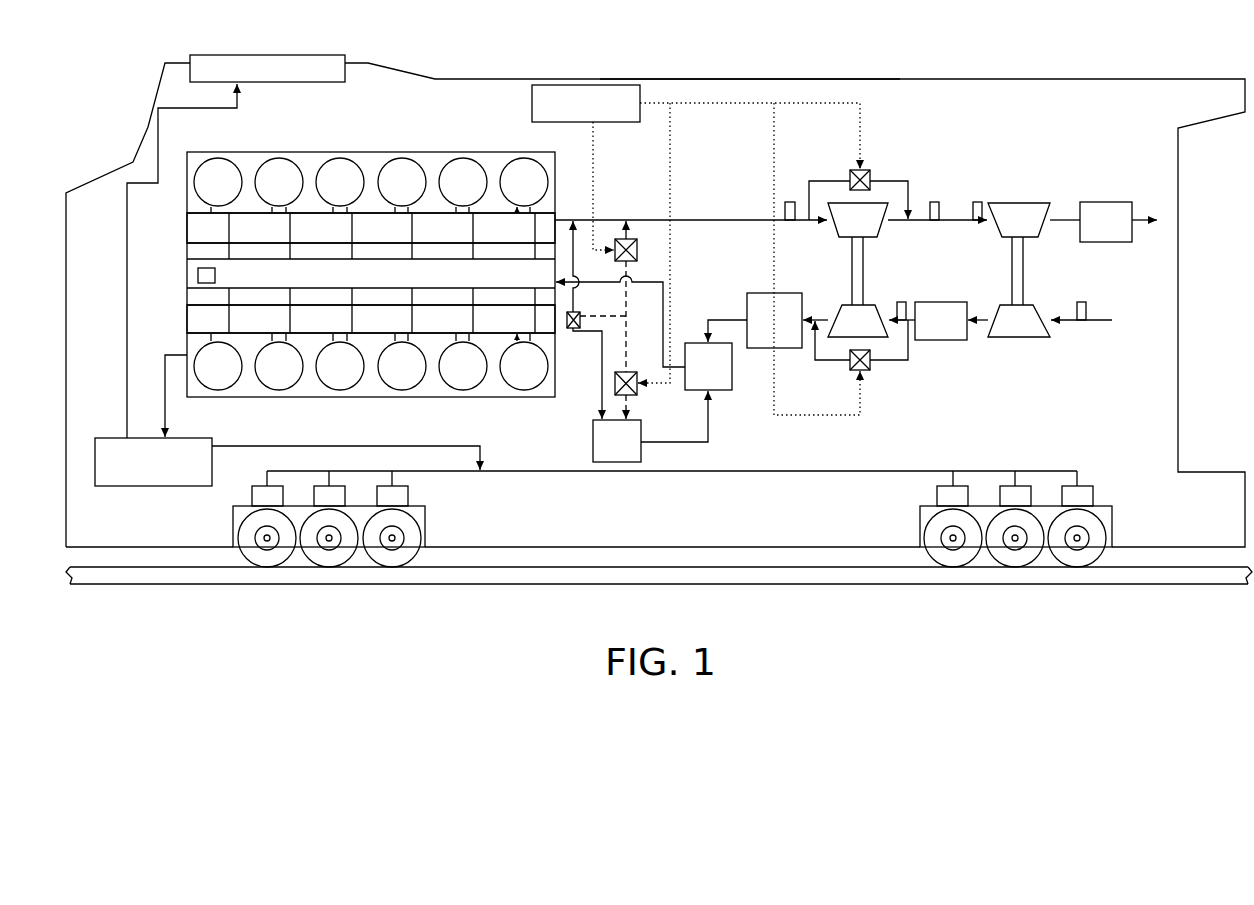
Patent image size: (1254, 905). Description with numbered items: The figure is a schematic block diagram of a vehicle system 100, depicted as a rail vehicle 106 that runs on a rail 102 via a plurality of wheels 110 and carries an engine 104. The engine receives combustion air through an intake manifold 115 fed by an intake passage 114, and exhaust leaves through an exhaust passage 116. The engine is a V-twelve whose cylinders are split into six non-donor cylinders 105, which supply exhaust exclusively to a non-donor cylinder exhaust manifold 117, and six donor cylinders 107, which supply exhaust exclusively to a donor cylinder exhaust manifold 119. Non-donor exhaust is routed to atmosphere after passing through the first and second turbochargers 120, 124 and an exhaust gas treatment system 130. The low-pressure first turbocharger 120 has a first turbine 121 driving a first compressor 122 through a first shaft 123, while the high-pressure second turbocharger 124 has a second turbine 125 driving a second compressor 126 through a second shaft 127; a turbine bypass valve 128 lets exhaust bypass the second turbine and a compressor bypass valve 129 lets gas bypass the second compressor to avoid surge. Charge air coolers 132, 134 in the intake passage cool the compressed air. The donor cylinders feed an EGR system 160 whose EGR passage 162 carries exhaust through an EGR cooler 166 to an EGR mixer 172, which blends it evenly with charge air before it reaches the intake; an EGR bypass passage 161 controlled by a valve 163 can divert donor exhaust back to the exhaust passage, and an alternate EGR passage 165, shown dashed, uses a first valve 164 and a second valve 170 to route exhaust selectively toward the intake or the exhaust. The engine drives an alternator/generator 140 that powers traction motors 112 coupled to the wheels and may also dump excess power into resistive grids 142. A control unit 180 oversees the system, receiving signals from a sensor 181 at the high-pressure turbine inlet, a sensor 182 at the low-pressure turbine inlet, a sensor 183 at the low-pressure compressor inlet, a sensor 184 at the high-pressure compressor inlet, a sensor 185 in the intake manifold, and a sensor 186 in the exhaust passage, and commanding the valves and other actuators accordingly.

The vehicle system 100 is at (1088, 50).
The rail 102 is at (1175, 585).
The engine 104 is at (458, 142).
The non-donor cylinders 105 is at (345, 159).
The rail vehicle 106 is at (952, 79).
The donor cylinders 107 is at (340, 390).
The wheels 110 is at (415, 533).
The traction motors 112 is at (408, 501).
The intake passage 114 is at (1065, 322).
The intake manifold 115 is at (372, 280).
The exhaust passage 116 is at (700, 220).
The non-donor cylinder exhaust manifold 117 is at (187, 222).
The donor cylinder exhaust manifold 119 is at (187, 316).
The first turbocharger 120 is at (1036, 295).
The first turbine 121 is at (1019, 220).
The first compressor 122 is at (1018, 352).
The first shaft 123 is at (1024, 287).
The second turbocharger 124 is at (878, 276).
The second turbine 125 is at (858, 220).
The second compressor 126 is at (858, 321).
The second shaft 127 is at (863, 287).
The turbine bypass valve 128 is at (870, 177).
The compressor bypass valve 129 is at (850, 366).
The exhaust gas treatment system 130 is at (1118, 222).
The charge air cooler 132 is at (938, 321).
The charge air cooler 134 is at (768, 320).
The alternator/generator 140 is at (287, 420).
The resistive grids 142 is at (332, 55).
The EGR system 160 is at (663, 326).
The EGR bypass passage 161 is at (578, 247).
The EGR passage 162 is at (601, 359).
The valve 163 is at (577, 311).
The first valve 164 is at (637, 250).
The alternate EGR passage 165 is at (622, 318).
The EGR cooler 166 is at (617, 441).
The second valve 170 is at (635, 396).
The EGR mixer 172 is at (686, 392).
The control unit 180 is at (696, 250).
The sensor 181 is at (790, 202).
The sensor 182 is at (934, 202).
The sensor 183 is at (1081, 302).
The sensor 184 is at (901, 302).
The sensor 185 is at (198, 276).
The sensor 186 is at (977, 202).